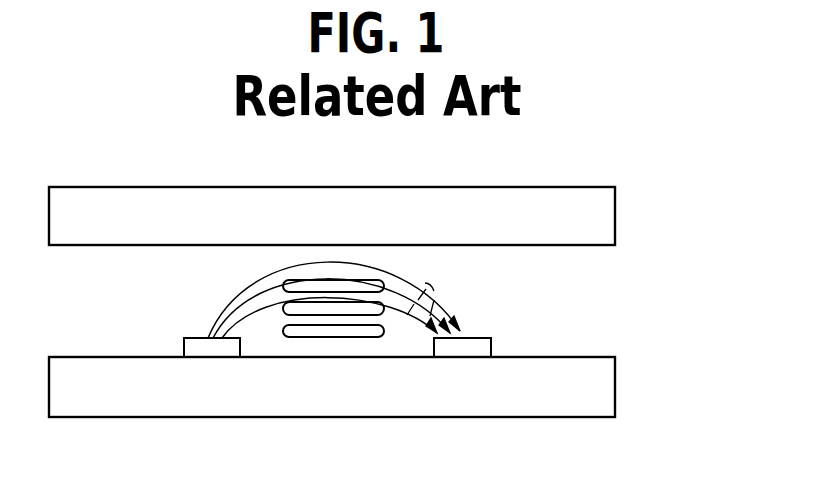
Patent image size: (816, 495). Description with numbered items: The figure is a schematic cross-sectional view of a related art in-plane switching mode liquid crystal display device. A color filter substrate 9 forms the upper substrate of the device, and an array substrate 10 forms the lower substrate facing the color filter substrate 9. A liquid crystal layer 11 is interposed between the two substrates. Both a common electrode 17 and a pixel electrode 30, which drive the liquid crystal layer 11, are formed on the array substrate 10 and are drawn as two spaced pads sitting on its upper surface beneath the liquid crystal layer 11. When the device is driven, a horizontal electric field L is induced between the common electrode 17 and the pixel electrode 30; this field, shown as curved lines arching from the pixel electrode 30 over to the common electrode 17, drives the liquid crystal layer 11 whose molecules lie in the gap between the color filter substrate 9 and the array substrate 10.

The color filter substrate 9 is at (642, 182).
The array substrate 10 is at (642, 357).
The liquid crystal layer 11 is at (642, 245).
The pixel electrode 30 is at (210, 345).
The common electrode 17 is at (472, 345).
The horizontal electric field L is at (417, 317).